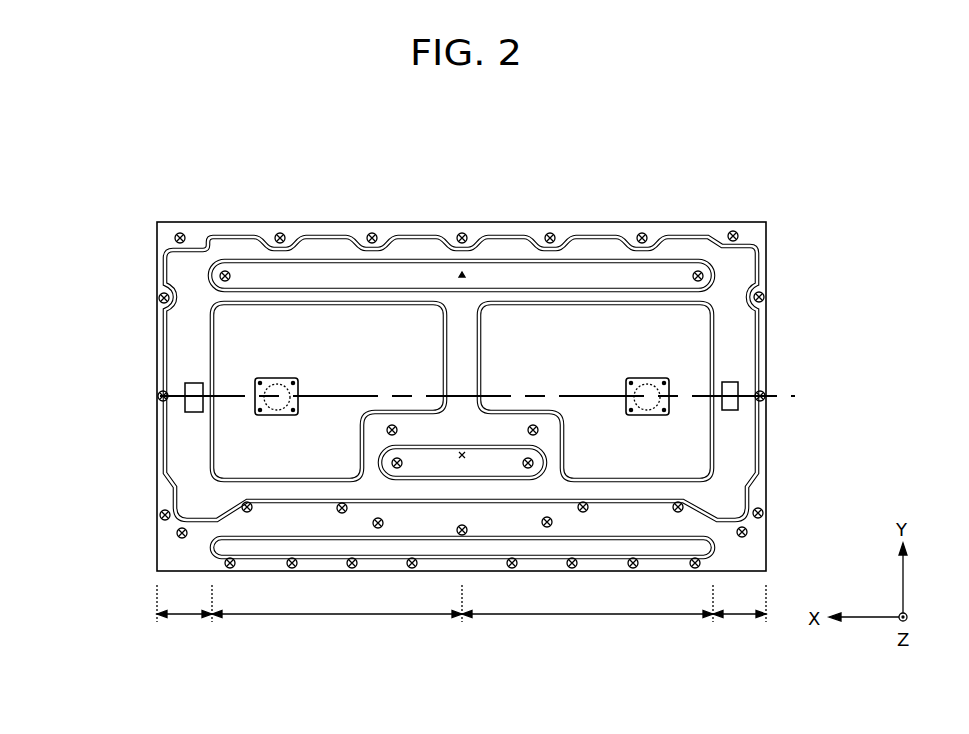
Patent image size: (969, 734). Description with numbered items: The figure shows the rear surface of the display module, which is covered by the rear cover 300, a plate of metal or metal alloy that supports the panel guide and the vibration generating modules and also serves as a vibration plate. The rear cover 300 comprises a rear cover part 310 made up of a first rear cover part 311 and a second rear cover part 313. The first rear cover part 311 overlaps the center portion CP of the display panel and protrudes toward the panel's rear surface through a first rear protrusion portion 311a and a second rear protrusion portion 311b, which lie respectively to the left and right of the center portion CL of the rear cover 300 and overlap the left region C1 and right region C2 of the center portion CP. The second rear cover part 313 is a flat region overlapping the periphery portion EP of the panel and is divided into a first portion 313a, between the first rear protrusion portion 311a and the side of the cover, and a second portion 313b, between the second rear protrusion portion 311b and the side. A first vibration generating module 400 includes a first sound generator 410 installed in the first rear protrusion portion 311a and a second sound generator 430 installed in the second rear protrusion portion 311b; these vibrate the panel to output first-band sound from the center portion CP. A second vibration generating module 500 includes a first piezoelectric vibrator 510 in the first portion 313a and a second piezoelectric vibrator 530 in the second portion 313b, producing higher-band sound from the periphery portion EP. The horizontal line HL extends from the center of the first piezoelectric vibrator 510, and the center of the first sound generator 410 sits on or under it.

The rear cover 300 is at (158, 222).
The rear cover part 310 is at (773, 152).
The first rear cover part 311 is at (462, 325).
The first rear protrusion portion 311a is at (340, 357).
The second rear protrusion portion 311b is at (597, 357).
The second rear cover part 313 is at (489, 354).
The first portion 313a is at (188, 320).
The second portion 313b is at (731, 322).
The first vibration generating module 400 is at (461, 410).
The first sound generator 410 is at (255, 402).
The second sound generator 430 is at (669, 406).
The second vibration generating module 500 is at (460, 363).
The first piezoelectric vibrator 510 is at (192, 381).
The second piezoelectric vibrator 530 is at (732, 381).
The horizontal line HL is at (795, 396).
The periphery portion EP is at (461, 619).
The center portion CP is at (462, 633).
The left region C1 is at (337, 633).
The right region C2 is at (587, 633).
The center portion CL is at (465, 619).